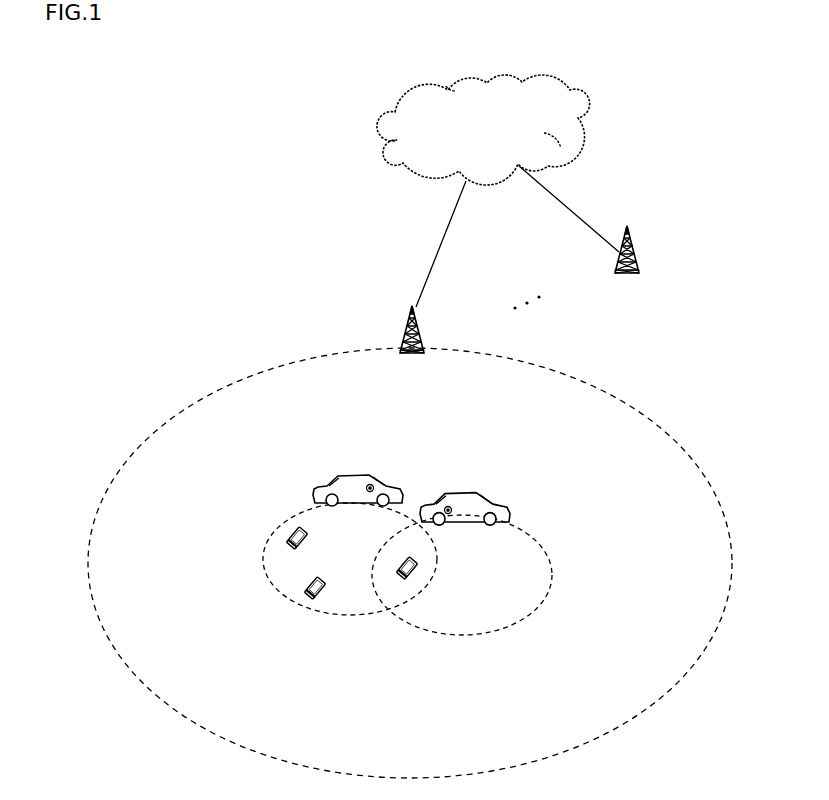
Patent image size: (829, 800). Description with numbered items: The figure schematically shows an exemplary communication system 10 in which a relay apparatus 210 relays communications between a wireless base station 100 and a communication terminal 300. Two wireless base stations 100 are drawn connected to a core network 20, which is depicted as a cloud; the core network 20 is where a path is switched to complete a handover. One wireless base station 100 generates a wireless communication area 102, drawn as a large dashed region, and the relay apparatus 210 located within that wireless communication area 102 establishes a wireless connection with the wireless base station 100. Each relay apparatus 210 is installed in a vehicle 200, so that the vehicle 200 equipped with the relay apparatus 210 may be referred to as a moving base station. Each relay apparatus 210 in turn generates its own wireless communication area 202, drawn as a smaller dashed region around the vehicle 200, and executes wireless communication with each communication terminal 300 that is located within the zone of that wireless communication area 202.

The communication system 10 is at (200, 60).
The core network 20 is at (580, 93).
The wireless base station 100 is at (422, 328).
The wireless communication area 102 is at (645, 412).
The vehicle 200 is at (317, 482).
The wireless communication area 202 is at (370, 616).
The relay apparatus 210 is at (365, 488).
The communication terminal 300 is at (309, 532).